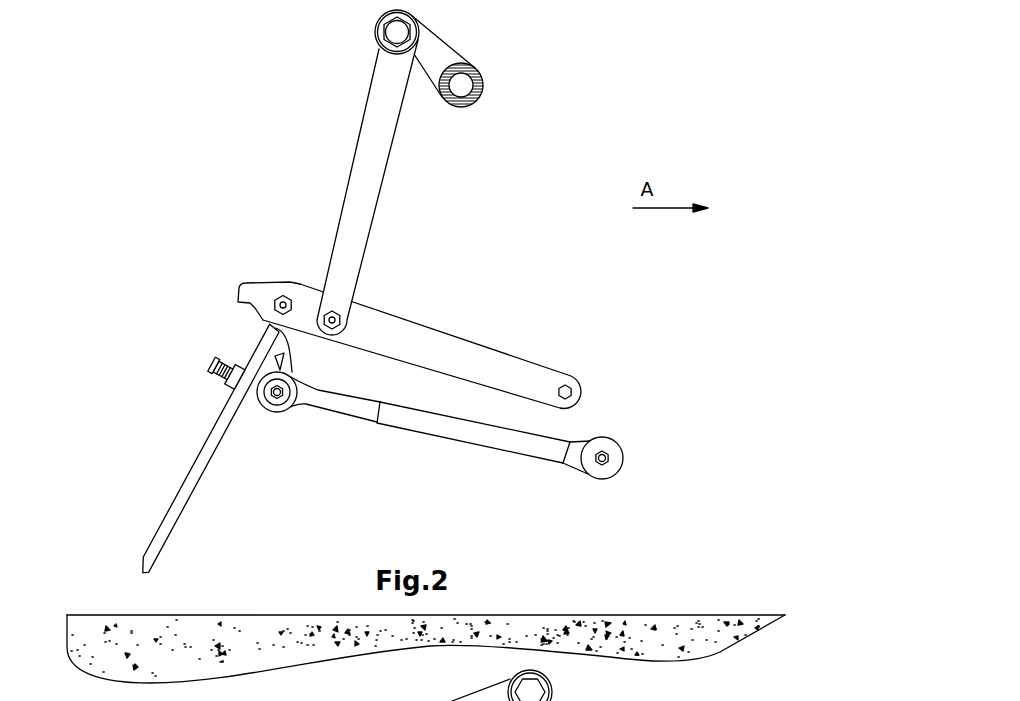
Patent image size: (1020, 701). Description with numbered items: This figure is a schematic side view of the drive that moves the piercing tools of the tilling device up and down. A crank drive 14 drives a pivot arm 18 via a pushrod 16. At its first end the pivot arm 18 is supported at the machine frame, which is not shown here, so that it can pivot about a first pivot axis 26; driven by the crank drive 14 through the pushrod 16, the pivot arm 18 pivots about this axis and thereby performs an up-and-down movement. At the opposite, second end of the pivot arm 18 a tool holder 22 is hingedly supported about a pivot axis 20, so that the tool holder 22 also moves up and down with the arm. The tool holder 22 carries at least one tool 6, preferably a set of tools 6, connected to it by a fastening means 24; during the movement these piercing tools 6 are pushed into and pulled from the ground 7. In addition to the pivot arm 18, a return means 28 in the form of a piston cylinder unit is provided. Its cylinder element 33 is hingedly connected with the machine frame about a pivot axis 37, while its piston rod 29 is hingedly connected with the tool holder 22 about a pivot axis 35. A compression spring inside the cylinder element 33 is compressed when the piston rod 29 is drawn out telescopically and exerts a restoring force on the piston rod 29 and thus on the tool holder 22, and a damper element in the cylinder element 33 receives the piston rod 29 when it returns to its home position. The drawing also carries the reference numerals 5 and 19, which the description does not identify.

The ground surface 5 is at (100, 614).
The tool 6 is at (170, 515).
The ground 7 is at (218, 650).
The crank drive 14 is at (548, 101).
The pushrod 16 is at (497, 355).
The pivot arm 18 is at (480, 365).
The pivot 19 is at (331, 310).
The pivot axis 20 is at (282, 295).
The tool holder 22 is at (258, 350).
The fastening means 24 is at (222, 361).
The first pivot axis 26 is at (569, 381).
The return means 28 is at (353, 438).
The piston rod 29 is at (327, 403).
The cylinder element 33 is at (497, 437).
The pivot axis 35 is at (277, 402).
The pivot axis 37 is at (617, 441).